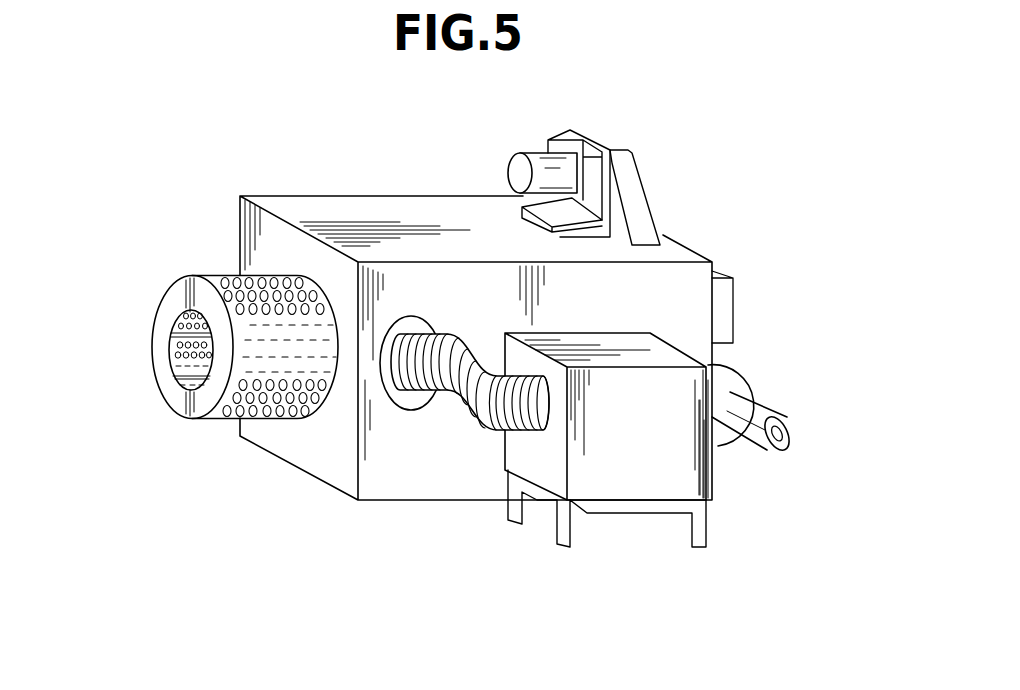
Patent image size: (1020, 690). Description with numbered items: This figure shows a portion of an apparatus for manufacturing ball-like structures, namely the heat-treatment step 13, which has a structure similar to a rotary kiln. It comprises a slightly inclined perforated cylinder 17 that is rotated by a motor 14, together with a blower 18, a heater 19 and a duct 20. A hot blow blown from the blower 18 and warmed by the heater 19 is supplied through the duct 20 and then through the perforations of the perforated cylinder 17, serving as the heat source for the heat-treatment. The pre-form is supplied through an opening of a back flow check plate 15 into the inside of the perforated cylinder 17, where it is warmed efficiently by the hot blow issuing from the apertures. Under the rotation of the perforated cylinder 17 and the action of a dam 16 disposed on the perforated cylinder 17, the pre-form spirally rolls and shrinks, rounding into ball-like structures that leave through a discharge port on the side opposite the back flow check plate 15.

The heat-treatment step 13 is at (428, 195).
The motor 14 is at (533, 152).
The back flow check plate 15 is at (180, 402).
The dam 16 is at (168, 348).
The perforated cylinder 17 is at (260, 360).
The blower 18 is at (757, 408).
The heater 19 is at (522, 450).
The duct 20 is at (465, 380).